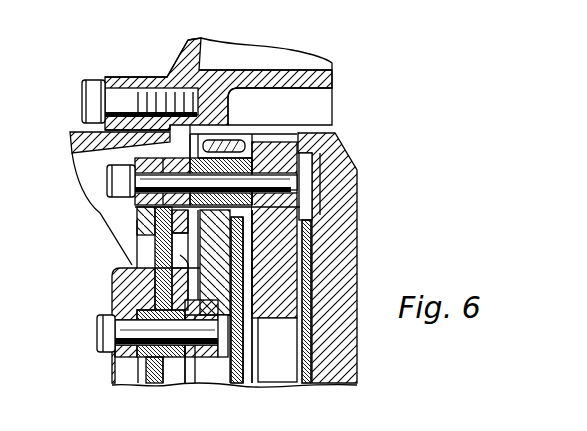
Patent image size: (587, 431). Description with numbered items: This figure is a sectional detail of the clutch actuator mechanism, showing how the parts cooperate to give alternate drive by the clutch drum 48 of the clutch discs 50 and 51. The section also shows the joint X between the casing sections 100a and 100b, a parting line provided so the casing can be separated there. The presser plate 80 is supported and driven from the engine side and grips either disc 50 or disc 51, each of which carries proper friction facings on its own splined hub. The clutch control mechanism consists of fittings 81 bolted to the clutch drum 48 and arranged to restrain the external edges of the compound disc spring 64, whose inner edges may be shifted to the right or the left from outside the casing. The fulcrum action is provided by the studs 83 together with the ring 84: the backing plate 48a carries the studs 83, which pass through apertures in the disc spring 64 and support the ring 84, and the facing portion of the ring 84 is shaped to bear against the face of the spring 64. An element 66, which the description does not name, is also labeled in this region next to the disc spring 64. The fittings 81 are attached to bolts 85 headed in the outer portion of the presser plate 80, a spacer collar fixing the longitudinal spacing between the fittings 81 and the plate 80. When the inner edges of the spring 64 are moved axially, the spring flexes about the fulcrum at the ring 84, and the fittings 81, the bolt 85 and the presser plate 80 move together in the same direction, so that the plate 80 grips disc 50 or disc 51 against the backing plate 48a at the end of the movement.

The joint X is at (152, 130).
The casing section 100a is at (240, 78).
The casing section 100b is at (78, 132).
The presser plate 80 is at (288, 140).
The clutch drum 48 is at (337, 169).
The backing plate 48a is at (247, 321).
The clutch disc 50 is at (307, 386).
The clutch disc 51 is at (236, 386).
The bolt 85 is at (290, 183).
The fitting 81 is at (136, 227).
The compound disc spring 64 is at (137, 249).
The seal 66 is at (178, 272).
The ring 84 is at (112, 290).
The stud 83 is at (115, 362).